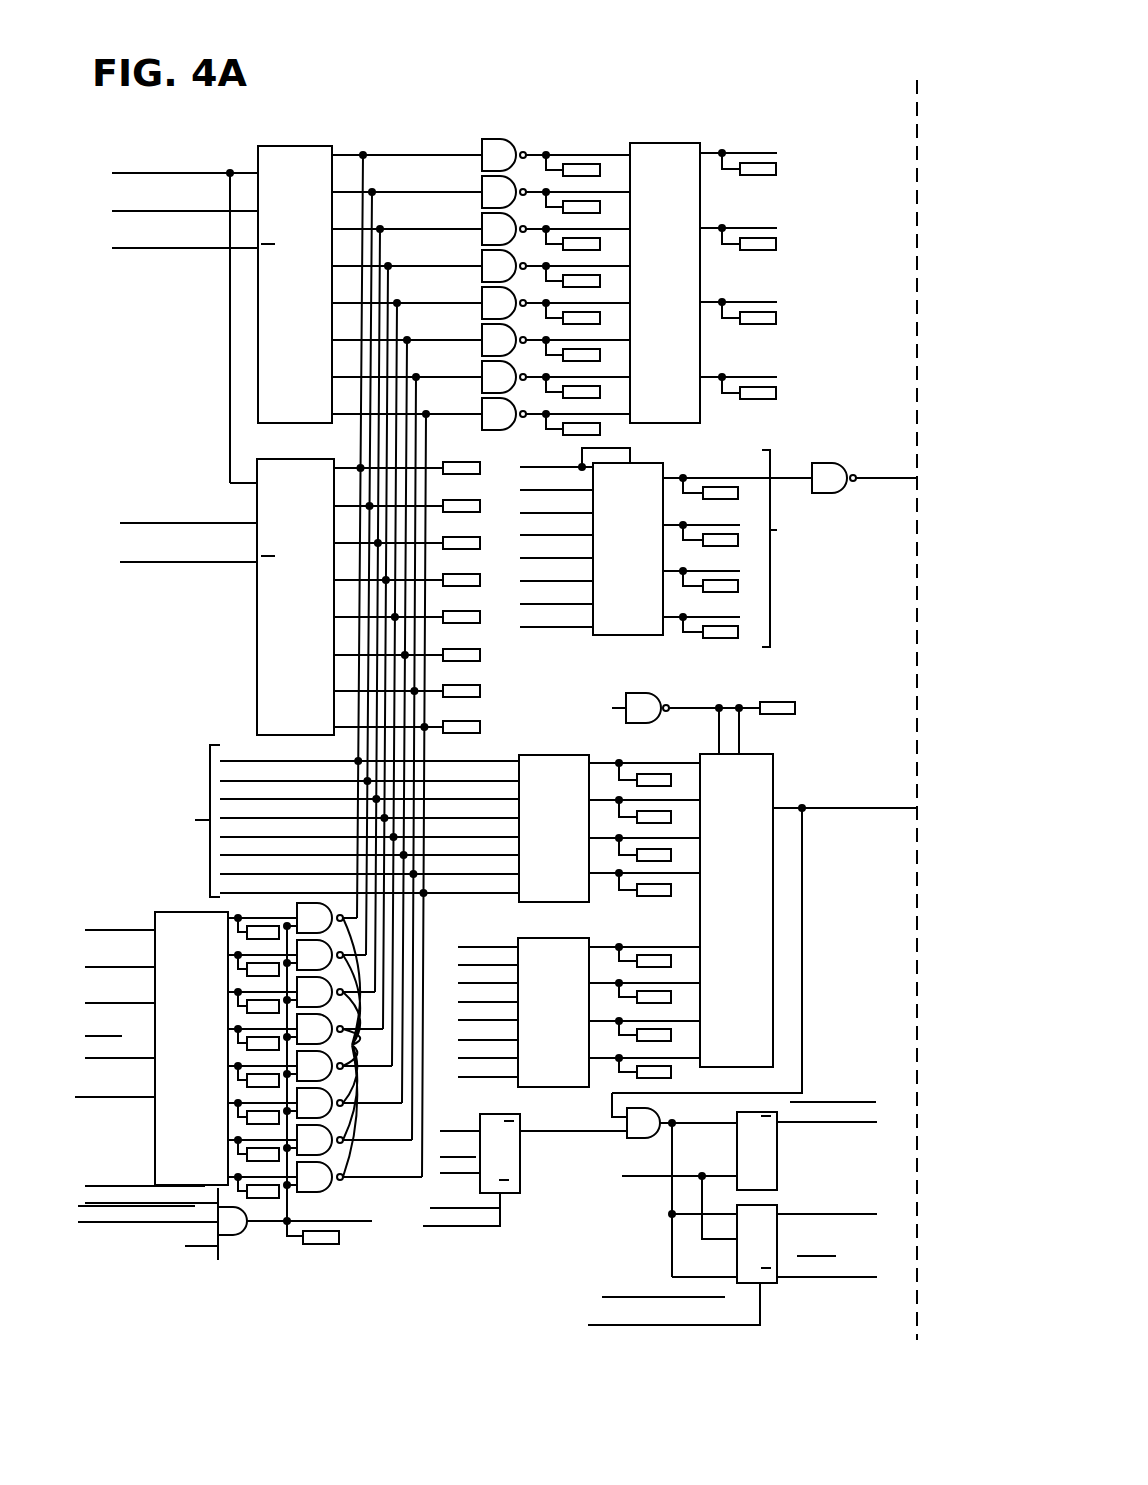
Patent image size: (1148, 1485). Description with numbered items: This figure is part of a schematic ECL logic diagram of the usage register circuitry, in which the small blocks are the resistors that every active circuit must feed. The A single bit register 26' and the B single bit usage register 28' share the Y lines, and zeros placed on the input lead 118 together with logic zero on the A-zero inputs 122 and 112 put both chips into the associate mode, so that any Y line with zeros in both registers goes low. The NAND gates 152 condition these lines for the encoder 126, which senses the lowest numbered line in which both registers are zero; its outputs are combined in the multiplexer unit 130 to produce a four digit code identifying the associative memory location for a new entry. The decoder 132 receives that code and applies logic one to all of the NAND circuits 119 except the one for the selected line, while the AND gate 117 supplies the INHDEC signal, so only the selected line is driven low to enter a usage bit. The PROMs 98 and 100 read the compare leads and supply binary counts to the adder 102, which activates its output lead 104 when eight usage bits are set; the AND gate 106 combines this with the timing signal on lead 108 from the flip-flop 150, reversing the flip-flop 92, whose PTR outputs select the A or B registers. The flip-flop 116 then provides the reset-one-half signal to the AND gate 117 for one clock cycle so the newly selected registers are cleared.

The A single bit register 26' is at (311, 261).
The input lead 118 is at (213, 172).
The A0 input 122 is at (115, 213).
The NAND gates 152 is at (474, 131).
The encoder 126 is at (672, 143).
The B single bit usage register 28' is at (300, 598).
The R/W lead 112 is at (252, 518).
The multiplexer unit 130 is at (625, 630).
The programmable read-only memory 98 is at (556, 765).
The adder 102 is at (775, 756).
The programmable read-only memory 100 is at (562, 952).
The decoder 132 is at (185, 917).
The NAND circuits 119 is at (371, 1047).
The AND gate 117 is at (240, 1233).
The output lead 104 is at (805, 998).
The lead 108 is at (590, 1128).
The AND gate 106 is at (632, 1135).
The flip-flop 150 is at (517, 1195).
The flip-flop 116 is at (778, 1152).
The flip-flop 92 is at (770, 1285).